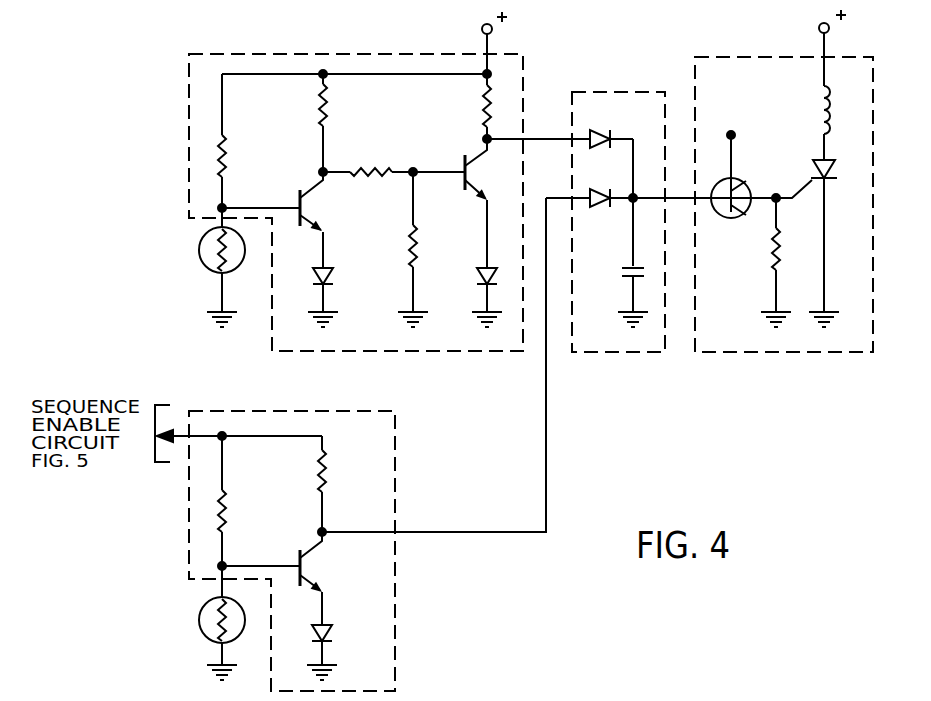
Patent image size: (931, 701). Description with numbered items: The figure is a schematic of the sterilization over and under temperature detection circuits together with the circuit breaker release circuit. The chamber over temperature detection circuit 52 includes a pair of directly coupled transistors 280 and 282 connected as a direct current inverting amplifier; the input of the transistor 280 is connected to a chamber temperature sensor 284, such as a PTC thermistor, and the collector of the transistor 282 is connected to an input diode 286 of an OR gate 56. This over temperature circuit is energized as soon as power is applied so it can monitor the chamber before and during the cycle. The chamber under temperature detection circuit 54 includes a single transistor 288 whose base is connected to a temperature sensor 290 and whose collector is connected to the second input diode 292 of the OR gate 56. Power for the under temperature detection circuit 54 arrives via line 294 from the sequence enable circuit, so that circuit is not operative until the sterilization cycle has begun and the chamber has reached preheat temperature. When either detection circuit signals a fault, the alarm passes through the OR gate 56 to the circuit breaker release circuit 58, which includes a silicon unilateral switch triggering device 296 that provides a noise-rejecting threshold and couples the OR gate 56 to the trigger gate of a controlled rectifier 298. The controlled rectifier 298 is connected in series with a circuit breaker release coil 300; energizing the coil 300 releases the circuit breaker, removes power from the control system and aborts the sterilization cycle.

The chamber over temperature detection circuit 52 is at (383, 54).
The chamber under temperature detection circuit 54 is at (305, 411).
The OR gate 56 is at (639, 92).
The circuit breaker release circuit 58 is at (742, 57).
The transistor 280 is at (298, 198).
The transistor 282 is at (462, 158).
The chamber temperature sensor 284 is at (200, 256).
The input diode 286 is at (602, 130).
The transistor 288 is at (298, 559).
The temperature sensor 290 is at (198, 628).
The second input diode 292 is at (602, 208).
The line 294 is at (180, 432).
The silicon unilateral switch (SUS) triggering device 296 is at (748, 184).
The controlled rectifier 298 is at (811, 164).
The circuit breaker release coil 300 is at (818, 117).